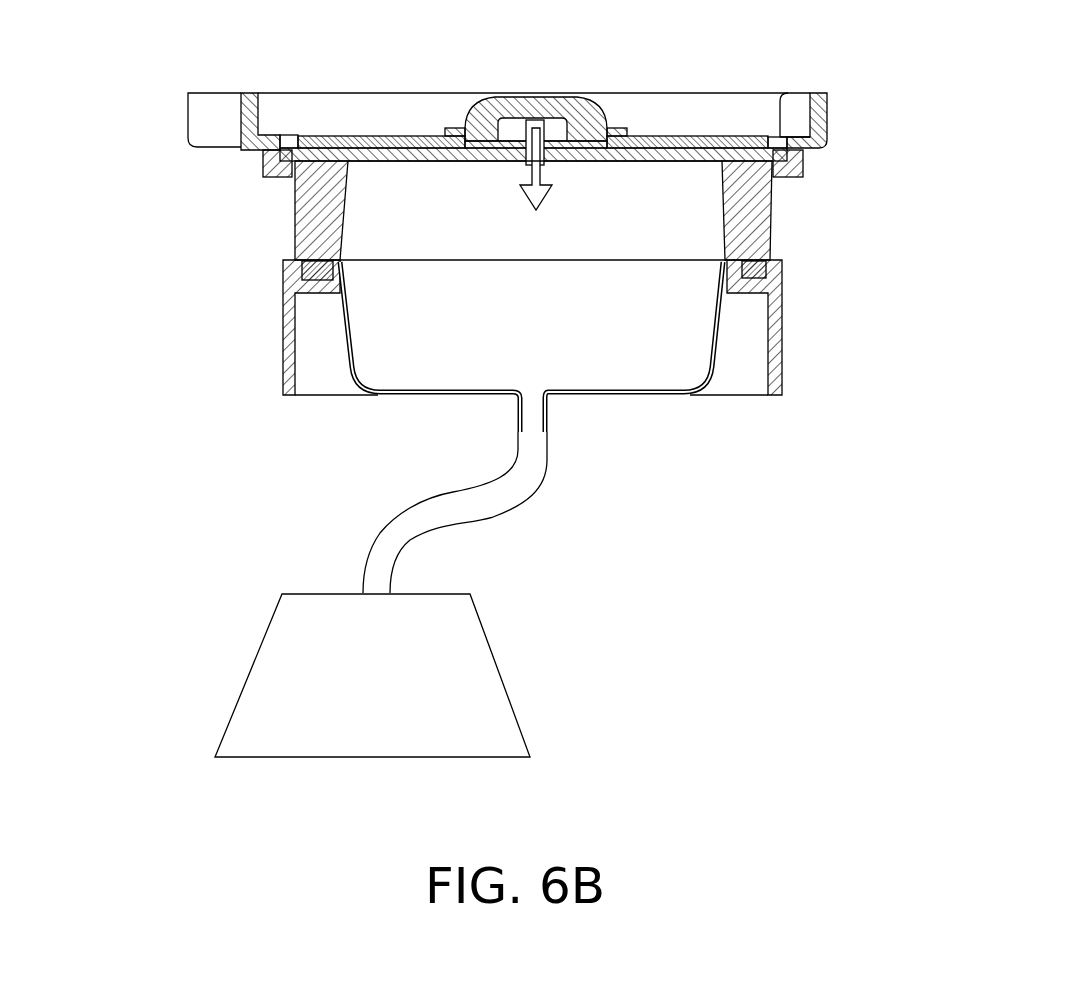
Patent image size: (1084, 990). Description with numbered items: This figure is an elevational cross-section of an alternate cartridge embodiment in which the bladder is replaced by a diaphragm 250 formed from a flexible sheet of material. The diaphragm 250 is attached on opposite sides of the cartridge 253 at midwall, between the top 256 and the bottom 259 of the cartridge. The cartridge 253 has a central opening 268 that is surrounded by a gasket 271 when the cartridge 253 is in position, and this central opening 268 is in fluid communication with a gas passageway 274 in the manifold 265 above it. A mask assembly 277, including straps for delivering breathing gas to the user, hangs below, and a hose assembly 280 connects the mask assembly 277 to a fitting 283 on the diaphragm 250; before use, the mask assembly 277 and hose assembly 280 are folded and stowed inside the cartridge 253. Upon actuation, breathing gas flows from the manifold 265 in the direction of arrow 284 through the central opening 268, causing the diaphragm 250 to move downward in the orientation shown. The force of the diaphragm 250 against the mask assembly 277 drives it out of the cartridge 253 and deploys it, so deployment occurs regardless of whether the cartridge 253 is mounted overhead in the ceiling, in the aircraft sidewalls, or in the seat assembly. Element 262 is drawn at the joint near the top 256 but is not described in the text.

The diaphragm 250 is at (348, 355).
The cartridge 253 is at (174, 316).
The top 256 is at (773, 224).
The bottom 259 is at (783, 318).
The clamp 262 is at (267, 137).
The manifold 265 is at (828, 122).
The central opening 268 is at (530, 158).
The gasket 271 is at (470, 121).
The gas passageway 274 is at (549, 110).
The mask assembly 277 is at (240, 698).
The hose assembly 280 is at (365, 549).
The fitting 283 is at (517, 402).
The arrow 284 is at (553, 114).